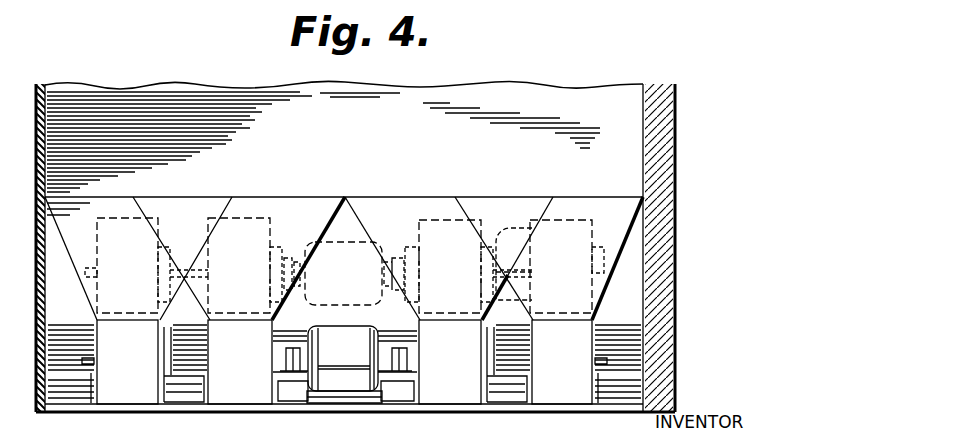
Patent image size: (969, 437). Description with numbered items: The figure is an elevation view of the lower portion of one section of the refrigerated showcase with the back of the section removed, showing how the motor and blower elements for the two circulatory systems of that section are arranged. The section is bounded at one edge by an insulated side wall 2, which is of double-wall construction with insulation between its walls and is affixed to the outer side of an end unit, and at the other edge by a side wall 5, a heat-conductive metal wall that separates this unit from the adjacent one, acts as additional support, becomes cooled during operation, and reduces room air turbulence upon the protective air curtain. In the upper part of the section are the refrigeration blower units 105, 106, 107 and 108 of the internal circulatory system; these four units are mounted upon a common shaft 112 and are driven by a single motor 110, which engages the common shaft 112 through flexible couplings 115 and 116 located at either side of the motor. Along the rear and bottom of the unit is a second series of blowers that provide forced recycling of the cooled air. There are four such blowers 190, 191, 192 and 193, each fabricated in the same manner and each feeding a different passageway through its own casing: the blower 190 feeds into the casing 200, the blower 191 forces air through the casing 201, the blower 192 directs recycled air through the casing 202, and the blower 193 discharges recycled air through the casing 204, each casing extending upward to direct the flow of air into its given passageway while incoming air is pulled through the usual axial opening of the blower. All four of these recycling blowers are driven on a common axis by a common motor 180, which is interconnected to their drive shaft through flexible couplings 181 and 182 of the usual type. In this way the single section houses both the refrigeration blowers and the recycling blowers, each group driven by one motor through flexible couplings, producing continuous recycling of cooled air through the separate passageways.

The insulated side wall 2 is at (677, 187).
The side wall 5 is at (36, 181).
The refrigeration blower unit 105 is at (558, 228).
The refrigeration blower unit 106 is at (433, 225).
The refrigeration blower unit 107 is at (233, 230).
The refrigeration blower unit 108 is at (117, 232).
The motor 110 is at (346, 198).
The common shaft 112 is at (494, 246).
The flexible coupling 115 is at (290, 265).
The flexible coupling 116 is at (396, 265).
The common motor 180 is at (360, 353).
The flexible coupling 181 is at (300, 372).
The flexible coupling 182 is at (402, 372).
The blower 190 is at (576, 347).
The blower 191 is at (466, 347).
The blower 192 is at (252, 347).
The blower 193 is at (142, 347).
The casing 200 is at (632, 226).
The casing 201 is at (466, 292).
The casing 202 is at (252, 292).
The casing 204 is at (142, 292).